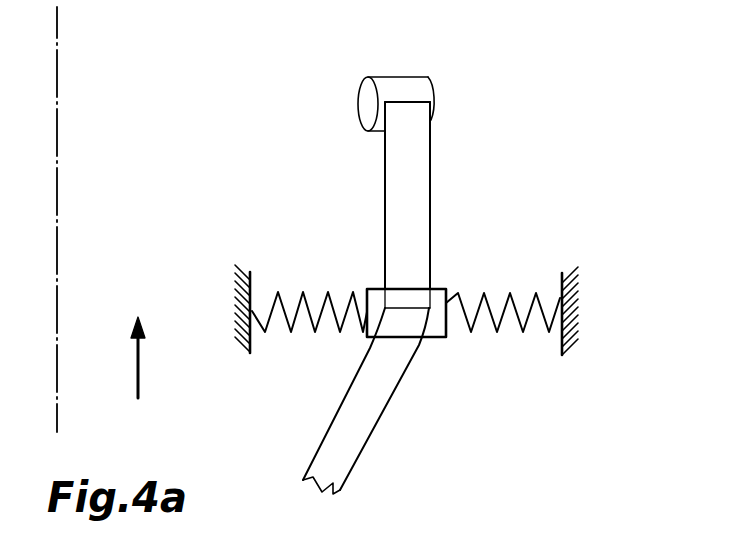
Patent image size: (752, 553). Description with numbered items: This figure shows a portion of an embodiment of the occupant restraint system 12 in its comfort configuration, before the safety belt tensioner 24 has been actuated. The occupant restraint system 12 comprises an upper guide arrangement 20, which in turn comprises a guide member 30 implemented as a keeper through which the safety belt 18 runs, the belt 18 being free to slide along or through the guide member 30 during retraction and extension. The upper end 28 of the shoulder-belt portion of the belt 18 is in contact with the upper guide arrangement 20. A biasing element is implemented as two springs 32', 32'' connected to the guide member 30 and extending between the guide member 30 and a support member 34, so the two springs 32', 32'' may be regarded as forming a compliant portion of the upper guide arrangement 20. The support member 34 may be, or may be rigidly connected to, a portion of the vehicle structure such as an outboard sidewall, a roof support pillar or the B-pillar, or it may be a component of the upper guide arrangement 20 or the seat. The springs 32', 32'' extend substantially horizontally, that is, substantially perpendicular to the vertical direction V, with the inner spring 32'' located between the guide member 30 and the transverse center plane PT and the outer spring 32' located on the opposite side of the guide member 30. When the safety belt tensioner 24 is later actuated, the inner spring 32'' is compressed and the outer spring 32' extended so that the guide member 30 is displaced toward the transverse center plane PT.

The occupant restraint system 12 is at (237, 187).
The safety belt 18 is at (353, 437).
The upper guide arrangement 20 is at (467, 272).
The safety belt tensioner 24 is at (367, 101).
The upper end 28 is at (417, 372).
The guide member 30 is at (436, 298).
The outer spring 32' is at (503, 346).
The inner spring 32'' is at (309, 279).
The support member 34 is at (238, 298).
The vertical direction V is at (138, 373).
The transverse center plane PT is at (58, 43).